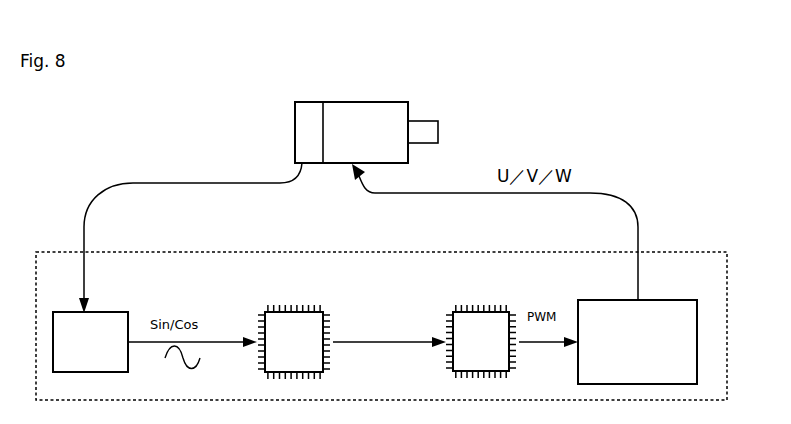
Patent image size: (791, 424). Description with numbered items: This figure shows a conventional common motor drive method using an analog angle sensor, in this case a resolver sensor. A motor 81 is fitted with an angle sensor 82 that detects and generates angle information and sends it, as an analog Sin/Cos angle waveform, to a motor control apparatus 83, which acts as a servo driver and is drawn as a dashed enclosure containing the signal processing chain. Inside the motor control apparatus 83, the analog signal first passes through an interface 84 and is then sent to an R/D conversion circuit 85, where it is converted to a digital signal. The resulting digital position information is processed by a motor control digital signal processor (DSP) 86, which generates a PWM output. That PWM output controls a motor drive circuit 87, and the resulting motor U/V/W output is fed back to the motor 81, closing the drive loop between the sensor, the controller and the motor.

The motor 81 is at (410, 105).
The angle sensor 82 is at (296, 114).
The motor control apparatus 83 is at (213, 248).
The interface 84 is at (95, 312).
The R/D conversion circuit 85 is at (263, 308).
The motor control digital signal processor (DSP) 86 is at (455, 308).
The motor drive circuit 87 is at (655, 300).